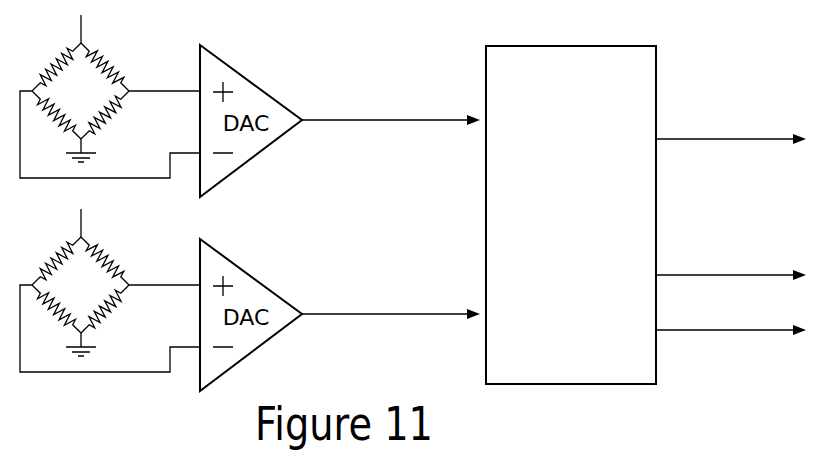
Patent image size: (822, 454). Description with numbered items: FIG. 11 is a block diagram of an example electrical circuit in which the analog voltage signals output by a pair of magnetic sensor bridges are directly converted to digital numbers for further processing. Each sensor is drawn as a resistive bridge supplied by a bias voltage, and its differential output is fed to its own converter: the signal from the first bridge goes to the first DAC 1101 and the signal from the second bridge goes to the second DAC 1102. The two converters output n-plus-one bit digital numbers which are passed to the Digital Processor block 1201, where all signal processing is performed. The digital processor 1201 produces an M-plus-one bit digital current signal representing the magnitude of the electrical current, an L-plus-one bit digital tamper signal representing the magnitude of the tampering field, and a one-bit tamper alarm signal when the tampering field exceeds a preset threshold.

The DAC1 1101 is at (262, 87).
The DAC2 1102 is at (250, 299).
The Digital Processor 1201 is at (660, 230).